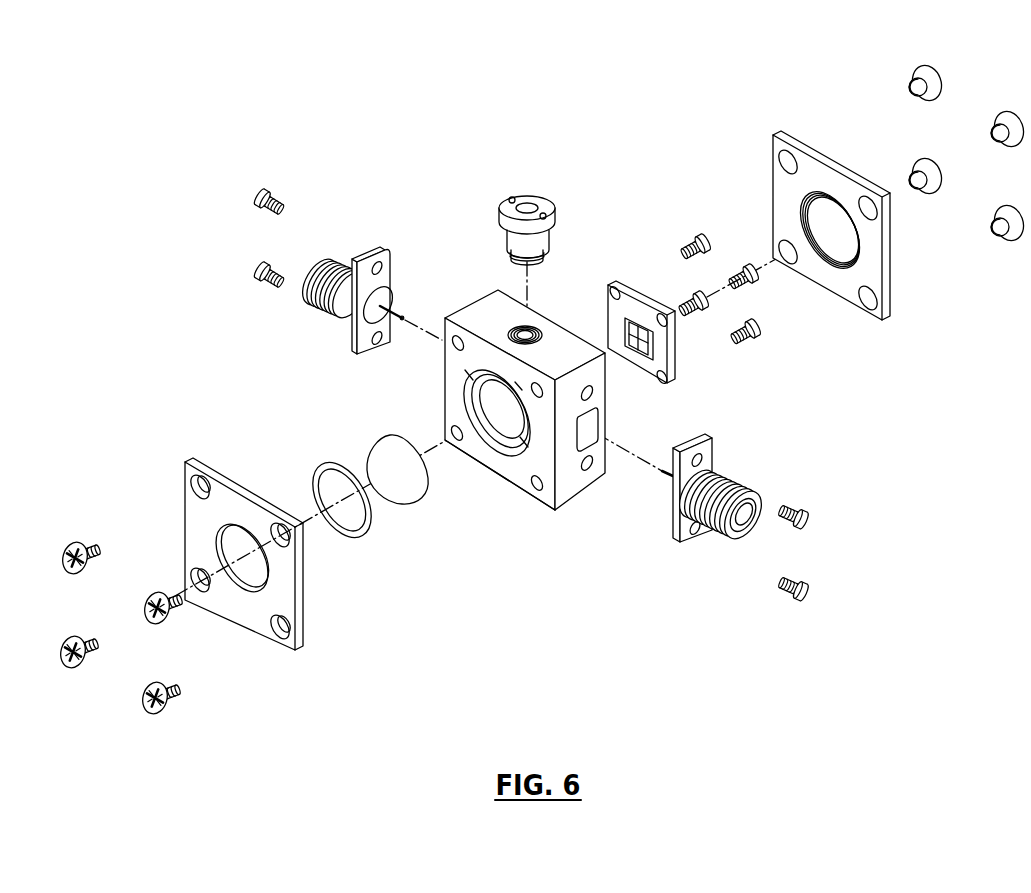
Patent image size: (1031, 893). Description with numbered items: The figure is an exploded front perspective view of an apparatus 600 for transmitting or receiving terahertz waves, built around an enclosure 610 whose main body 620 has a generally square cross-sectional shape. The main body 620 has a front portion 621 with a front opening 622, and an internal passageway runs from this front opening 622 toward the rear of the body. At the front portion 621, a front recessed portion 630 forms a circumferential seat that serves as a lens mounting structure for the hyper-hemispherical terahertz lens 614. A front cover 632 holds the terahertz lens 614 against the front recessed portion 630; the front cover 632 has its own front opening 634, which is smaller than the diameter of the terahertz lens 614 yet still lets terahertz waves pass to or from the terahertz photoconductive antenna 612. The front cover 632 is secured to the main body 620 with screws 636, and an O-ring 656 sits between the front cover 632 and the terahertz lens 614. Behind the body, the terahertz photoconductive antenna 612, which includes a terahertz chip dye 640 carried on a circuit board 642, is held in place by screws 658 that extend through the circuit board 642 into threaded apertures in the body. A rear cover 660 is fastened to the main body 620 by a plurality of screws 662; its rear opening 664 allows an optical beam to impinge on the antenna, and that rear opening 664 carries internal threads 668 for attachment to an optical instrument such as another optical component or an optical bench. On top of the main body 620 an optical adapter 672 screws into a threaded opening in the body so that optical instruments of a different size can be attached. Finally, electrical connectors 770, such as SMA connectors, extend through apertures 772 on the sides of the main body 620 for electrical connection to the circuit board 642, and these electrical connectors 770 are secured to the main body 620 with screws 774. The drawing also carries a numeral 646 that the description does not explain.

The apparatus 600 is at (215, 73).
The enclosure 610 is at (492, 249).
The terahertz photoconductive antenna 612 is at (637, 278).
The terahertz lens 614 is at (382, 457).
The main body 620 is at (483, 310).
The front portion 621 is at (545, 497).
The front opening 622 is at (508, 418).
The front recessed portion 630 is at (470, 397).
The front cover 632 is at (253, 613).
The front opening 634 is at (251, 572).
The screws 636 is at (70, 542).
The terahertz chip dye 640 is at (630, 348).
The circuit board 642 is at (620, 313).
The recess 646 is at (217, 548).
The O-ring 656 is at (362, 535).
The screws 658 is at (743, 267).
The rear cover 660 is at (847, 287).
The screws 662 is at (913, 75).
The rear opening 664 is at (826, 208).
The internal threads 668 is at (835, 253).
The optical adapter 672 is at (547, 192).
The electrical connectors 770 is at (333, 260).
The apertures 772 is at (589, 425).
The screws 774 is at (262, 196).